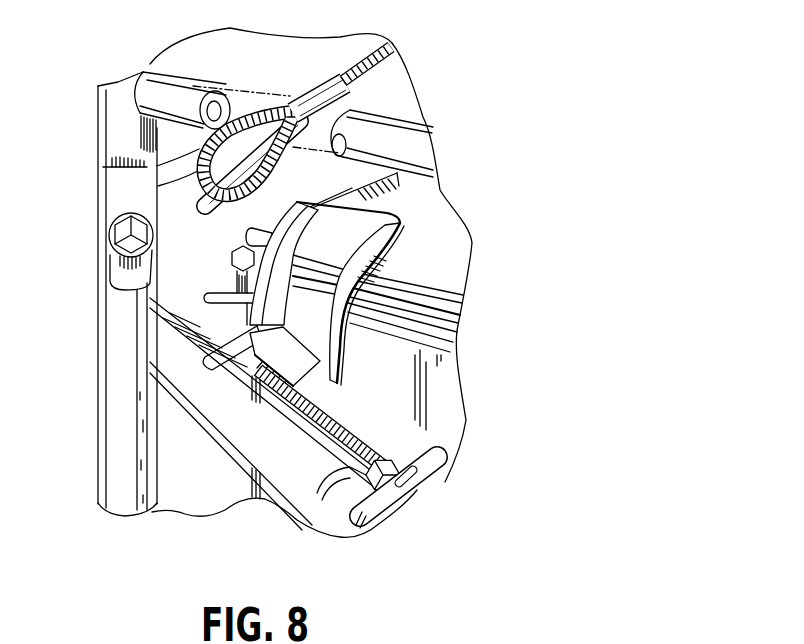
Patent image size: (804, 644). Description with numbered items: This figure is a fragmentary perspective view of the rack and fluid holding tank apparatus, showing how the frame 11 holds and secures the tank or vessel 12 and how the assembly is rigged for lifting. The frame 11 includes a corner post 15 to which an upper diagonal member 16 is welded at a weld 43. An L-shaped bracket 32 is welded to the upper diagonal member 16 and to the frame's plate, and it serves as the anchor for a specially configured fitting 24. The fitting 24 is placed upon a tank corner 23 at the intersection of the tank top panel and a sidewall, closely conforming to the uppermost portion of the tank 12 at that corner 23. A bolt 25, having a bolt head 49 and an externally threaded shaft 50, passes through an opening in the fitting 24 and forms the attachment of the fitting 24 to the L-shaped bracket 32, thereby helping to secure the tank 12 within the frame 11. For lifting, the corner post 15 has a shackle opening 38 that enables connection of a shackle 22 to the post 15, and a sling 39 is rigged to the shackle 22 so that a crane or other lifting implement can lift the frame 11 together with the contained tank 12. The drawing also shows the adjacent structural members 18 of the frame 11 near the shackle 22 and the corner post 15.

The frame 11 is at (97, 437).
The tank or vessel 12 is at (440, 210).
The corner post 15 is at (120, 507).
The upper diagonal member 16 is at (250, 437).
The channel bracket 18 is at (192, 90).
The shackle 22 is at (200, 212).
The tank corner 23 is at (277, 243).
The fitting 24 is at (363, 237).
The bolt 25 is at (350, 448).
The L-shaped bracket 32 is at (425, 463).
The shackle opening 38 is at (120, 240).
The sling 39 is at (356, 63).
The weld 43 is at (147, 330).
The bolt head 49 is at (235, 250).
The externally threaded shaft 50 is at (340, 463).